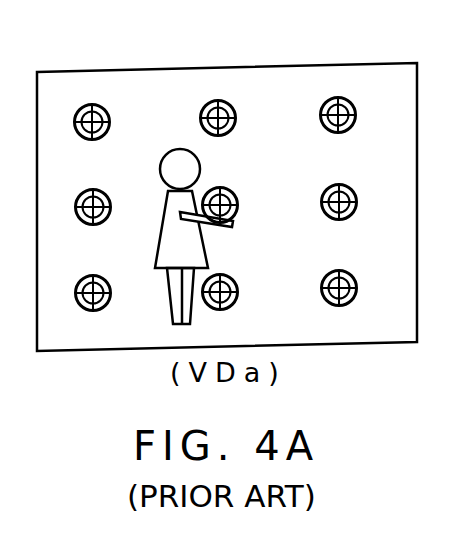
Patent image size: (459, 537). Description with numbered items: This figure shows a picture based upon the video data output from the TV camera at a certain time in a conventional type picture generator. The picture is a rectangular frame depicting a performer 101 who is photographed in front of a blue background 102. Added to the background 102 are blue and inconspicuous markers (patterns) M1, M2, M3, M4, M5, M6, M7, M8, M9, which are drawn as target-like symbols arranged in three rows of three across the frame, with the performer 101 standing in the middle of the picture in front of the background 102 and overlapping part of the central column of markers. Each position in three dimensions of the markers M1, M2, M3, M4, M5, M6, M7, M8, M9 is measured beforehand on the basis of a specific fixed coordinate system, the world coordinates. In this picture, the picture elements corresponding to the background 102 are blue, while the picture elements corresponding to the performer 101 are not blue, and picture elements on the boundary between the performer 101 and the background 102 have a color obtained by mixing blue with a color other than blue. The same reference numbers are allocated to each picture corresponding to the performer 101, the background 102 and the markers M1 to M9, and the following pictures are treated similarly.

The performer 101 is at (180, 151).
The background 102 is at (337, 32).
The marker M1 is at (362, 115).
The marker M2 is at (363, 202).
The marker M3 is at (363, 288).
The marker M4 is at (242, 118).
The marker M5 is at (244, 205).
The marker M6 is at (244, 292).
The marker M7 is at (116, 122).
The marker M8 is at (117, 207).
The marker M9 is at (117, 293).